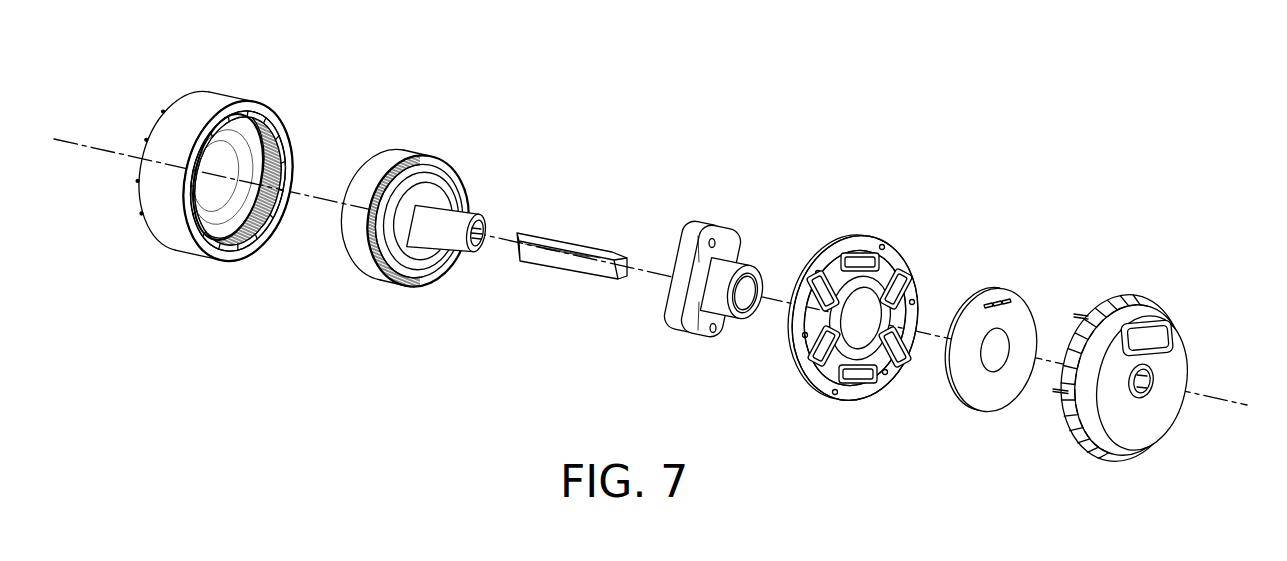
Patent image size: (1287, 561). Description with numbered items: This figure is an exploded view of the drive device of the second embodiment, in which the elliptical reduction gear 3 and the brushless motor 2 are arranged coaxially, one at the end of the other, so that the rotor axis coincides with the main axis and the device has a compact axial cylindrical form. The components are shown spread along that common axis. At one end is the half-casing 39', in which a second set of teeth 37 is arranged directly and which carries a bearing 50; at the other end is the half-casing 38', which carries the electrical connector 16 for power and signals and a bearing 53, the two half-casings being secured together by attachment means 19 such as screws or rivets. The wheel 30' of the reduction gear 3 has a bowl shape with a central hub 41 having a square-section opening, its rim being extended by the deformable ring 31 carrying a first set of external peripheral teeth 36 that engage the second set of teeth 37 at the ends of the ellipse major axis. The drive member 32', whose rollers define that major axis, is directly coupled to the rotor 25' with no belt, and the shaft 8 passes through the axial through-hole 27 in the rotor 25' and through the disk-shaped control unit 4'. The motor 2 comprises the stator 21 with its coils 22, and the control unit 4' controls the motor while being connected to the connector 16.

The brushless motor 2 is at (958, 270).
The elliptical reduction gear 3 is at (392, 186).
The control unit 4' is at (990, 391).
The shaft 8 is at (572, 240).
The electrical connector 16 is at (1170, 337).
The attachment means 19 is at (1080, 314).
The stator 21 is at (855, 313).
The coils 22 is at (866, 378).
The rotor 25' is at (744, 258).
The axial through-hole 27 is at (742, 306).
The wheel 30' is at (434, 211).
The deformable ring 31 is at (450, 168).
The drive member 32' is at (725, 264).
The first set of external peripheral teeth 36 is at (380, 270).
The second set of teeth 37 is at (268, 246).
The half-casing 38' is at (1151, 360).
The half-casing 39' is at (242, 176).
The central hub 41 is at (472, 233).
The bearing 50 is at (200, 167).
The bearing 53 is at (1150, 384).